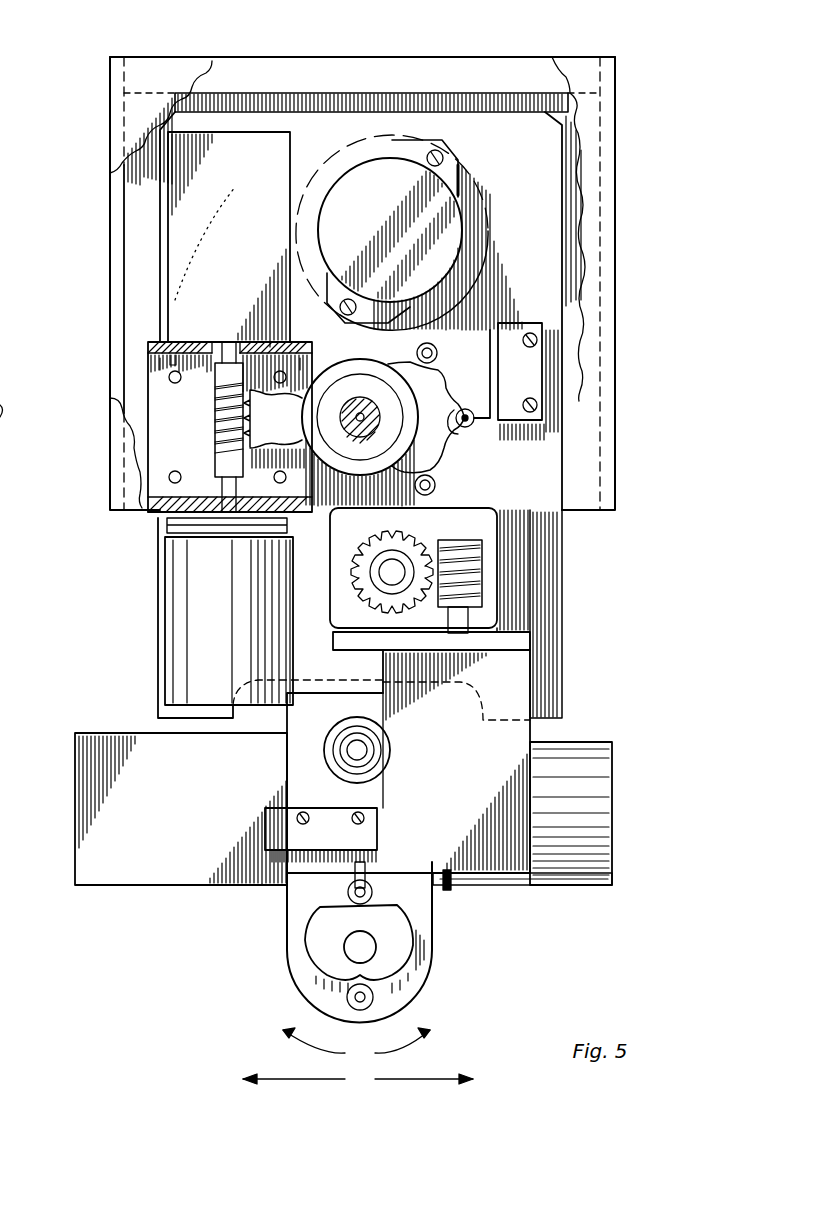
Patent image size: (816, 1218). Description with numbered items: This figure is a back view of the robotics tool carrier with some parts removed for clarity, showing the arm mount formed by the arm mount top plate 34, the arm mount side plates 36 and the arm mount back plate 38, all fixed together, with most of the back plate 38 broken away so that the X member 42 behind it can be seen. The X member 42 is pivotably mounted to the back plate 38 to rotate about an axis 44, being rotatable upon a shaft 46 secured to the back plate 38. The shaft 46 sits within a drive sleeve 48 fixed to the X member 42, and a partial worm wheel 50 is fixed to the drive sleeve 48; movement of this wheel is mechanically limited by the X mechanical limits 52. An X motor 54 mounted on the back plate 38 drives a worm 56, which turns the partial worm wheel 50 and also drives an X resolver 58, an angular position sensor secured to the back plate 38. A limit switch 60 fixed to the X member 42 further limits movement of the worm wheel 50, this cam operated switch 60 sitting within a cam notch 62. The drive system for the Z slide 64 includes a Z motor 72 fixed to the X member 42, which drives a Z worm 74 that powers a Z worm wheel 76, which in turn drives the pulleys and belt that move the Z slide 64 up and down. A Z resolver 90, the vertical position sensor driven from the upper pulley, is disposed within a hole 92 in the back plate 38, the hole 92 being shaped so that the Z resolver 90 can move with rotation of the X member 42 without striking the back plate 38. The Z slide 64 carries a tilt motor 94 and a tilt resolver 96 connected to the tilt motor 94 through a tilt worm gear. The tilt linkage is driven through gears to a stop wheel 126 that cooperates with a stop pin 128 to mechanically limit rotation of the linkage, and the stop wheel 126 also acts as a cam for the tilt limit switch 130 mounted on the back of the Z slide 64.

The arm mount top plate 34 is at (493, 68).
The arm mount side plates 36 is at (110, 285).
The arm mount back plate 38 is at (124, 115).
The X member 42 is at (508, 150).
The axis 44 is at (364, 398).
The shaft 46 is at (352, 428).
The drive sleeve 48 is at (368, 462).
The partial worm wheel 50 is at (514, 474).
The X mechanical limits 52 is at (418, 363).
The X motor 54 is at (225, 255).
The worm 56 is at (214, 431).
The X resolver 58 is at (203, 607).
The limit switch 60 is at (538, 372).
The cam notch 62 is at (472, 432).
The Z slide 64 is at (277, 913).
The Z motor 72 is at (443, 767).
The Z worm 74 is at (484, 574).
The Z worm wheel 76 is at (401, 546).
The Z resolver 90 is at (350, 210).
The hole 92 is at (485, 207).
The tilt motor 94 is at (166, 818).
The tilt resolver 96 is at (556, 790).
The stop wheel 126 is at (400, 905).
The stop pin 128 is at (342, 995).
The tilt limit switch 130 is at (333, 813).